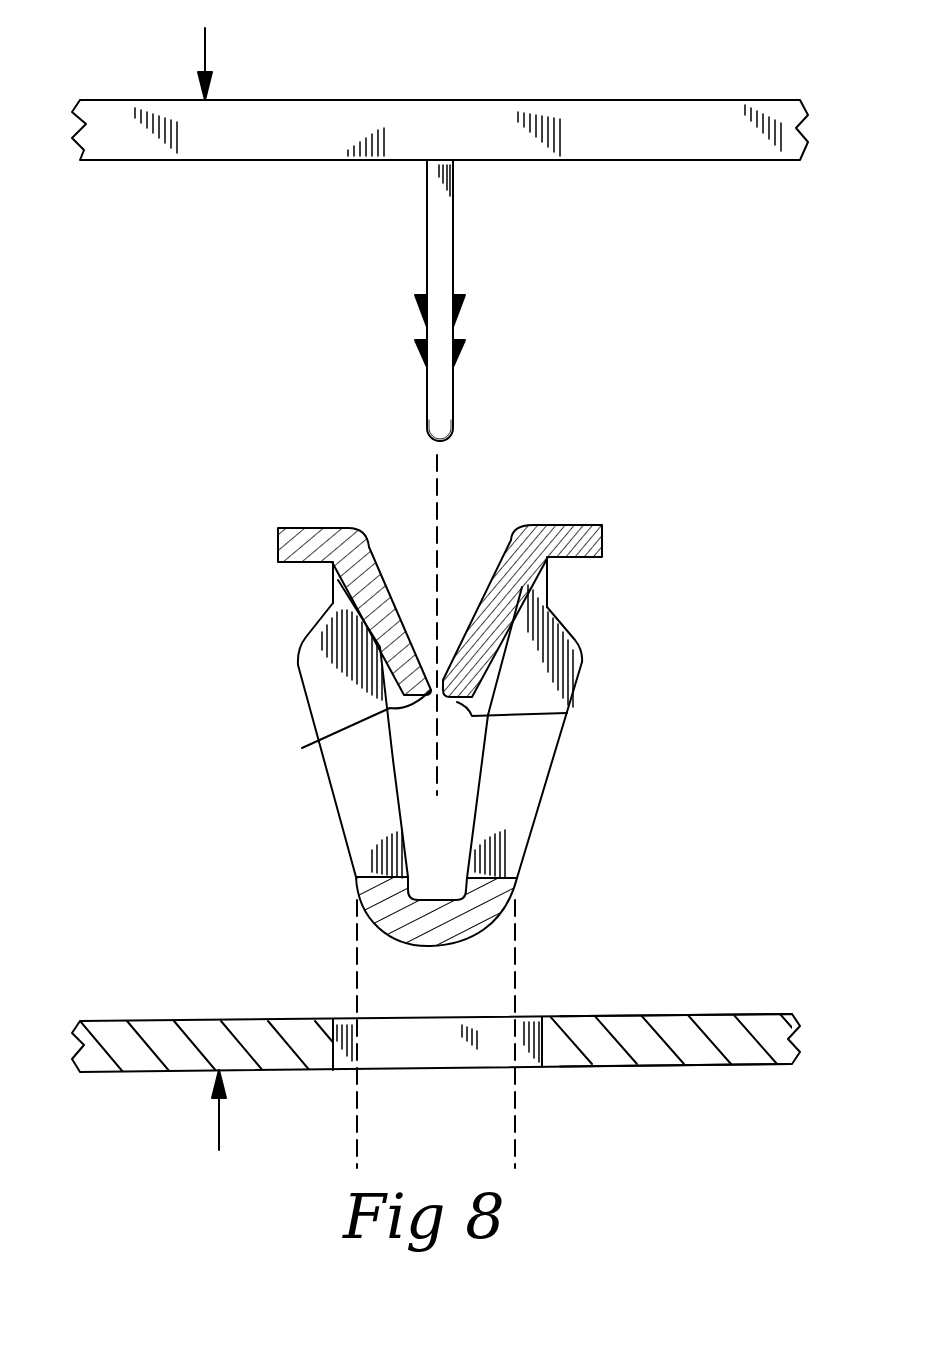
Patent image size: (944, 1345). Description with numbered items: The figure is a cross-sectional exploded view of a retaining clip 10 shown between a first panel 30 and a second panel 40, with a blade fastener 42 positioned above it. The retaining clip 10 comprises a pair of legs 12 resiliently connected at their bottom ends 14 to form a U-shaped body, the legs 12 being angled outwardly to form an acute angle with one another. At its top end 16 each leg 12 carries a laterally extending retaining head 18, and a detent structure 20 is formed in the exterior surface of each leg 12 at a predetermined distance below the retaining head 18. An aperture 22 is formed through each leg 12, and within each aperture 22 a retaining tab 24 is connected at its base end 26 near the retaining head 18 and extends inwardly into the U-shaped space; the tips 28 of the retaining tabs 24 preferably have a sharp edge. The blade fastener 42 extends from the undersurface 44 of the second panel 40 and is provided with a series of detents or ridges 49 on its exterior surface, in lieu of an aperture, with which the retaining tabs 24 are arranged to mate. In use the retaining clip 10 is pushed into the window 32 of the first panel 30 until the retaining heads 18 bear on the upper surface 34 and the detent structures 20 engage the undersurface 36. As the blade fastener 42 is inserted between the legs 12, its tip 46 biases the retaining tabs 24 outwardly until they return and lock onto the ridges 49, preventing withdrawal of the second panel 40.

The retaining clip 10 is at (305, 458).
The legs 12 is at (312, 821).
The bottom ends 14 is at (400, 946).
The top end 16 is at (332, 565).
The retaining head 18 is at (297, 527).
The detent structure 20 is at (285, 647).
The aperture 22 is at (500, 812).
The retaining tab 24 is at (356, 663).
The base end 26 is at (387, 530).
The tips 28 is at (308, 752).
The first panel 30 is at (150, 1088).
The window 32 is at (348, 1019).
The upper surface 34 is at (737, 1015).
The undersurface 36 is at (692, 1065).
The second panel 40 is at (520, 76).
The blade fastener 42 is at (402, 289).
The undersurface 44 is at (553, 161).
The tip 46 is at (456, 447).
The pin barbs 49 is at (416, 343).